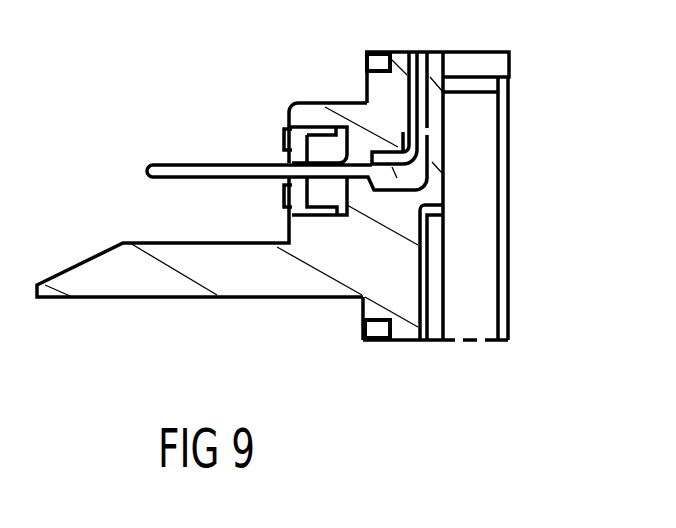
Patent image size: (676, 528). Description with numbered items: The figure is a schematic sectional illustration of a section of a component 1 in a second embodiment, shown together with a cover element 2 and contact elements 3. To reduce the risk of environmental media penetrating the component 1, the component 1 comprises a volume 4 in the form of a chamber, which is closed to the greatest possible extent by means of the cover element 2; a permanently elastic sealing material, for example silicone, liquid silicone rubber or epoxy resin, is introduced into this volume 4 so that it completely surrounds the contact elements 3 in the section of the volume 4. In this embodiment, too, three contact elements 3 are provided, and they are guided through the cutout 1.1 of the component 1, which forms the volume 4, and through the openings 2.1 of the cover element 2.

The component 1 is at (517, 235).
The cutout 1.1 is at (418, 153).
The cover element 2 is at (288, 162).
The openings 2.1 is at (288, 183).
The contact elements 3 is at (145, 172).
The volume 4 is at (322, 145).